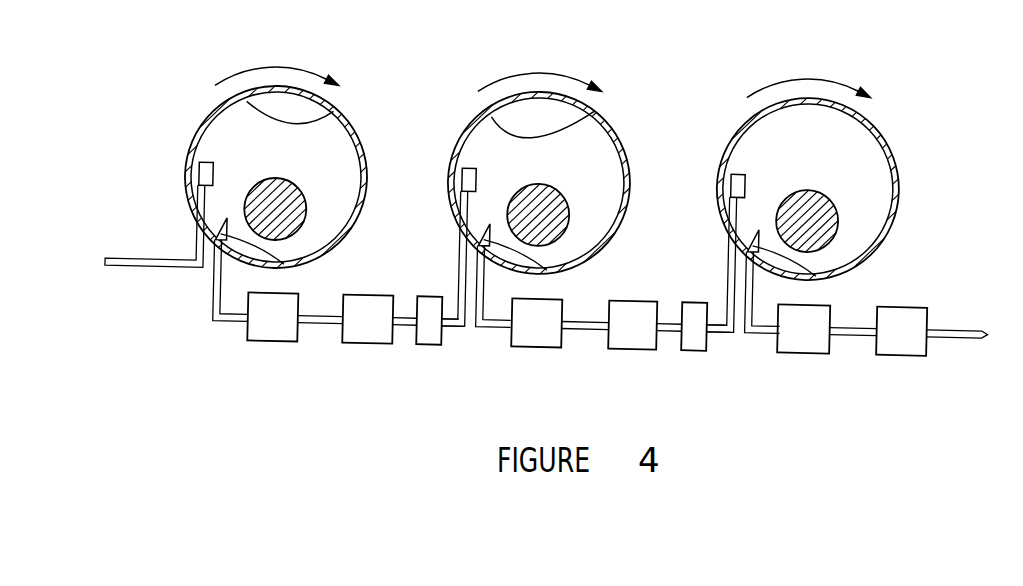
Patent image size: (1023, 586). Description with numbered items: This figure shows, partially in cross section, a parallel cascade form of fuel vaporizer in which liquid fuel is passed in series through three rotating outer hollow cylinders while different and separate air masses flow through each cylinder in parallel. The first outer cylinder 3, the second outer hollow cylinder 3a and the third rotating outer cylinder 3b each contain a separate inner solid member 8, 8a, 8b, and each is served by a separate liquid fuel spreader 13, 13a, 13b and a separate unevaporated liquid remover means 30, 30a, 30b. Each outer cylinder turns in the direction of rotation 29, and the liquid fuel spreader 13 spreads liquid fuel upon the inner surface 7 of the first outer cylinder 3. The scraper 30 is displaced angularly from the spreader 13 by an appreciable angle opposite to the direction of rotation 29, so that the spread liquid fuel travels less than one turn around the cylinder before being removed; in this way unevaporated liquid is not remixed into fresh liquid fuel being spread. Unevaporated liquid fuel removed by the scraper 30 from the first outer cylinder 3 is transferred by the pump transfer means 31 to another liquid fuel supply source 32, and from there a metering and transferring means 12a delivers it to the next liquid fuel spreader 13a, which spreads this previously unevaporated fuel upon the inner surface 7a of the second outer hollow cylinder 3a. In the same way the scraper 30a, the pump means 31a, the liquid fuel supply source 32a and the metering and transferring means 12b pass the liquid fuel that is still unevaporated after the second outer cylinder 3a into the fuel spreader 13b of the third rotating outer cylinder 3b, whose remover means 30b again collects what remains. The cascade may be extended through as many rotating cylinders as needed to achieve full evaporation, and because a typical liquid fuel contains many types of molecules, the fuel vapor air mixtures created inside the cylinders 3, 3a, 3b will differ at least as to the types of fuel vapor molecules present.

The outer cylinder 3 is at (276, 177).
The second outer hollow cylinder 3a is at (539, 183).
The third rotating outer cylinder 3b is at (794, 189).
The inner surface 7 is at (313, 96).
The inner surface 7a is at (559, 93).
The inner solid member 8 is at (287, 209).
The inner solid member 8a is at (550, 216).
The inner solid member 8b is at (819, 221).
The liquid fuel spreader 13 is at (157, 194).
The liquid fuel spreader 13a is at (428, 220).
The fuel spreader 13b is at (695, 238).
The direction of rotation 29 is at (530, 70).
The scraper 30 is at (276, 260).
The scraper 30a is at (538, 269).
The unevaporated liquid remover means 30b is at (809, 276).
The pump transfer means 31 is at (267, 342).
The liquid fuel supply source 32 is at (367, 341).
The metering and transferring means 12a is at (434, 341).
The pump means 31a is at (534, 341).
The liquid fuel supply source 32a is at (637, 341).
The metering and transferring means 12b is at (701, 341).